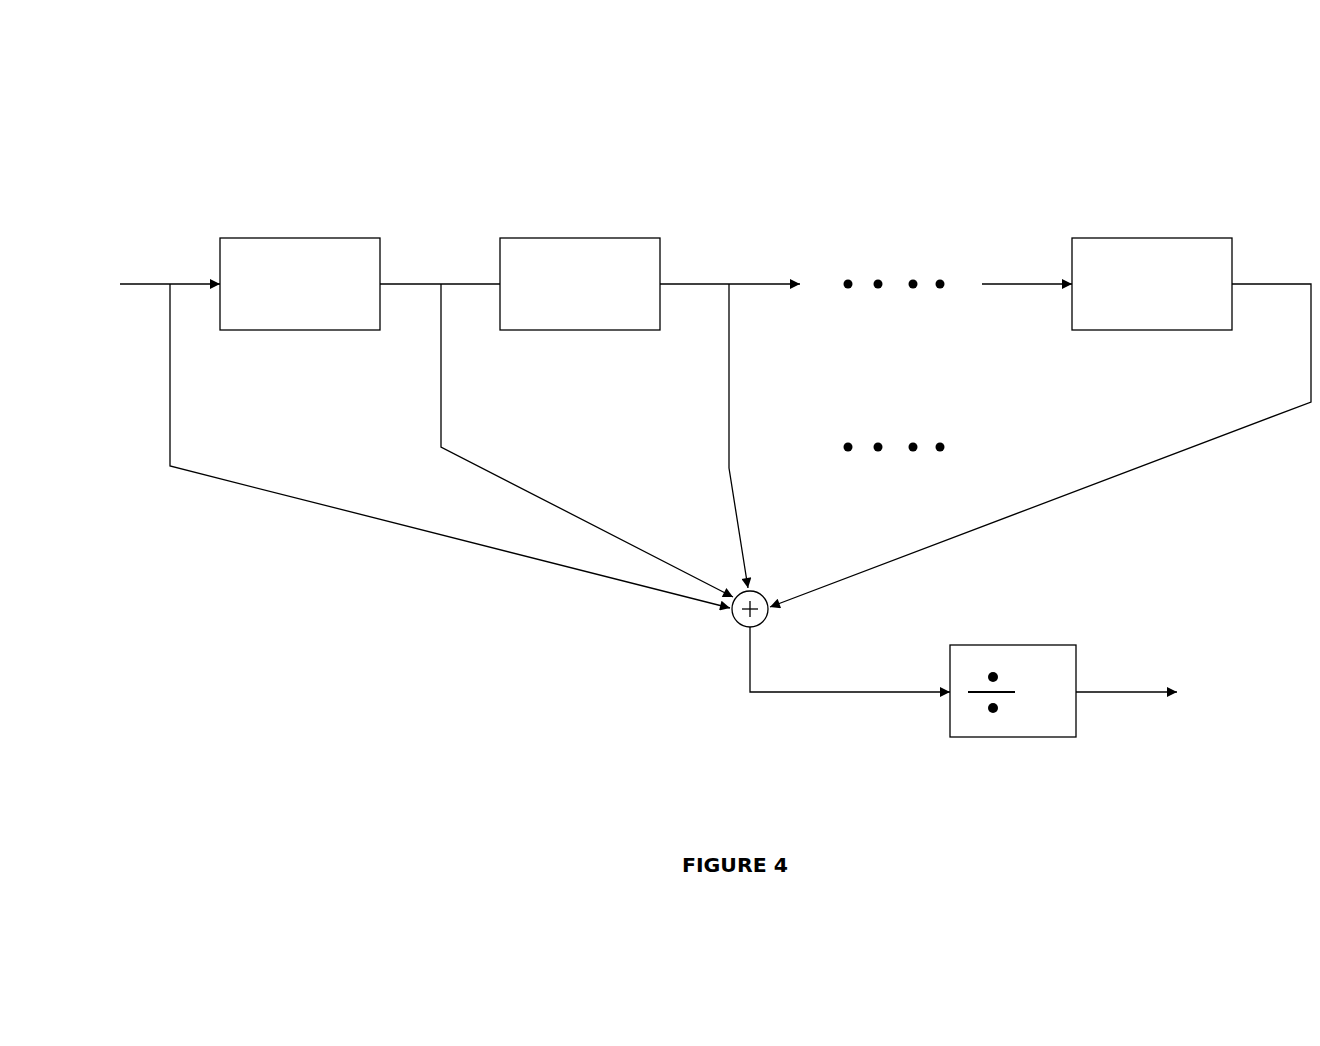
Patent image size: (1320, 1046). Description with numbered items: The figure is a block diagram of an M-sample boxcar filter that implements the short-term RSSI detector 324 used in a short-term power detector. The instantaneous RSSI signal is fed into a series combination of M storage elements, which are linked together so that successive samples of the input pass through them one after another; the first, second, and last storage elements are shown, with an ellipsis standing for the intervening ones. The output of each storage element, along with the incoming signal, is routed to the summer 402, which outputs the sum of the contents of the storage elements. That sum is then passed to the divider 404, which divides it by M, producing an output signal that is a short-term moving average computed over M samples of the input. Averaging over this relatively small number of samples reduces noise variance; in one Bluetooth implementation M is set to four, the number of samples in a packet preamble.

The short-term RSSI detector 324 is at (518, 97).
The summer 402 is at (765, 592).
The divider 404 is at (1015, 645).